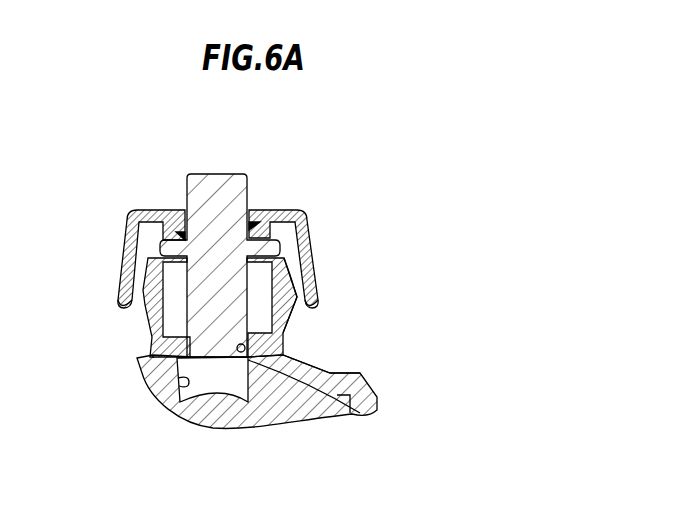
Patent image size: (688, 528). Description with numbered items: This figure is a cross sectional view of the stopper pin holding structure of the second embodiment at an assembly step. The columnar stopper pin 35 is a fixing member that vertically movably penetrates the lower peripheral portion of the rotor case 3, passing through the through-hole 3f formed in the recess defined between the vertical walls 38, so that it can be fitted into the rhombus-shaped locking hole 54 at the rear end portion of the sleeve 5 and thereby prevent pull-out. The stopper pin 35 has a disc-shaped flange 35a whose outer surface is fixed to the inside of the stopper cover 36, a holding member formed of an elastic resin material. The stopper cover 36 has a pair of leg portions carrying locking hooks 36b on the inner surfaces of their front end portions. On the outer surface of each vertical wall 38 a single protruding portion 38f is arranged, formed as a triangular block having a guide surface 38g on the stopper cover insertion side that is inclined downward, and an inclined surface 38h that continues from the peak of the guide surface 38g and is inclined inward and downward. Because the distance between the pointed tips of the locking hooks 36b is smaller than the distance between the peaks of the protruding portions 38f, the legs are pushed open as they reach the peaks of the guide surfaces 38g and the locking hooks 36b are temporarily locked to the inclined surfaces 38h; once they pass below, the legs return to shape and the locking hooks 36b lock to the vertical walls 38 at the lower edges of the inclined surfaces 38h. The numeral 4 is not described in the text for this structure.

The rotor case 3 is at (360, 397).
The through-hole 3f is at (240, 352).
The panel upper surface 4 is at (330, 373).
The sleeve 5 is at (253, 413).
The stopper pin 35 is at (197, 185).
The flange 35a is at (167, 237).
The stopper cover 36 is at (162, 209).
The locking hooks 36b is at (310, 303).
The vertical walls 38 is at (153, 327).
The protruding portion 38f is at (298, 295).
The guide surface 38g is at (295, 300).
The inclined surface 38h is at (312, 300).
The locking hole 54 is at (180, 382).